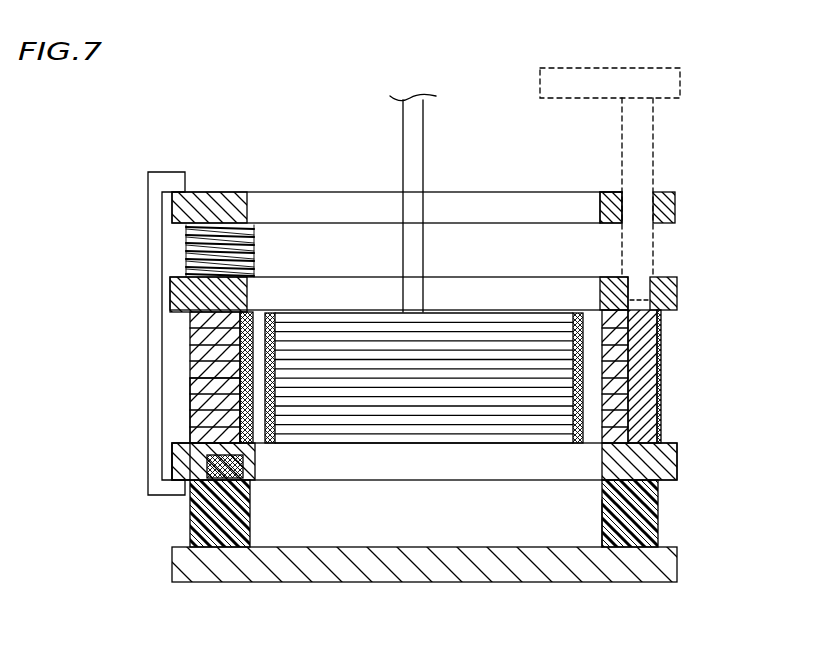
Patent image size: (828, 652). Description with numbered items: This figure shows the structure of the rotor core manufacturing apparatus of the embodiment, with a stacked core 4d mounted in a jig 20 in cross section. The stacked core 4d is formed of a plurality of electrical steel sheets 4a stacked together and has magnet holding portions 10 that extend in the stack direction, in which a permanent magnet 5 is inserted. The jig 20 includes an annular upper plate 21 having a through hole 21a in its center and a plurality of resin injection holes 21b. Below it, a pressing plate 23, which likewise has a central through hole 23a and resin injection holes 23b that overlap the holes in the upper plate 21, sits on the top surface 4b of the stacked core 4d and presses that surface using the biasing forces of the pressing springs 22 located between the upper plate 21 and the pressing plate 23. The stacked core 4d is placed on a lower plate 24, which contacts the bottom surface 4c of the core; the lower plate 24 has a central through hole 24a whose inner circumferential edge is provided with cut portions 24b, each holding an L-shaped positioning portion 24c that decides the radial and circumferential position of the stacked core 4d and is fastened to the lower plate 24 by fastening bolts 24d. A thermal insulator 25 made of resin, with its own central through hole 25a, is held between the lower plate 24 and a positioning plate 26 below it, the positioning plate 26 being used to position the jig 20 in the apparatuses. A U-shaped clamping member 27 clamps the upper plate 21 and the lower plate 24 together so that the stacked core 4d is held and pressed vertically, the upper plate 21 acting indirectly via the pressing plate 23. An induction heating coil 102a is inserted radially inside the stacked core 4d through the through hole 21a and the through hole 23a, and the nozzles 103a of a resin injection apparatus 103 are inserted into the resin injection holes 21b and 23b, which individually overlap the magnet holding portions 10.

The jig 20 is at (120, 148).
The clamping member 27 is at (155, 190).
The upper plate 21 is at (228, 192).
The through hole 21a is at (605, 205).
The resin injection holes 21b is at (622, 195).
The pressing spring 22 is at (185, 240).
The pressing plate 23 is at (195, 300).
The through hole 23a is at (603, 300).
The resin injection holes 23b is at (662, 285).
The top surface 4b is at (175, 295).
The stacked core 4d is at (195, 350).
The electrical steel sheets 4a is at (195, 400).
The bottom surface 4c is at (195, 462).
The positioning portion 24c is at (248, 313).
The lower plate 24 is at (205, 477).
The through hole 24a is at (600, 462).
The cut portions 24b is at (200, 500).
The fastening bolts 24d is at (245, 470).
The magnet holding portion 10 is at (659, 405).
The induction heating coil 102a is at (280, 355).
The permanent magnet 5 is at (659, 365).
The thermal insulator 25 is at (660, 510).
The through hole 25a is at (602, 527).
The positioning plate 26 is at (679, 572).
The resin injection apparatus 103 is at (683, 87).
The nozzles 103a is at (655, 148).